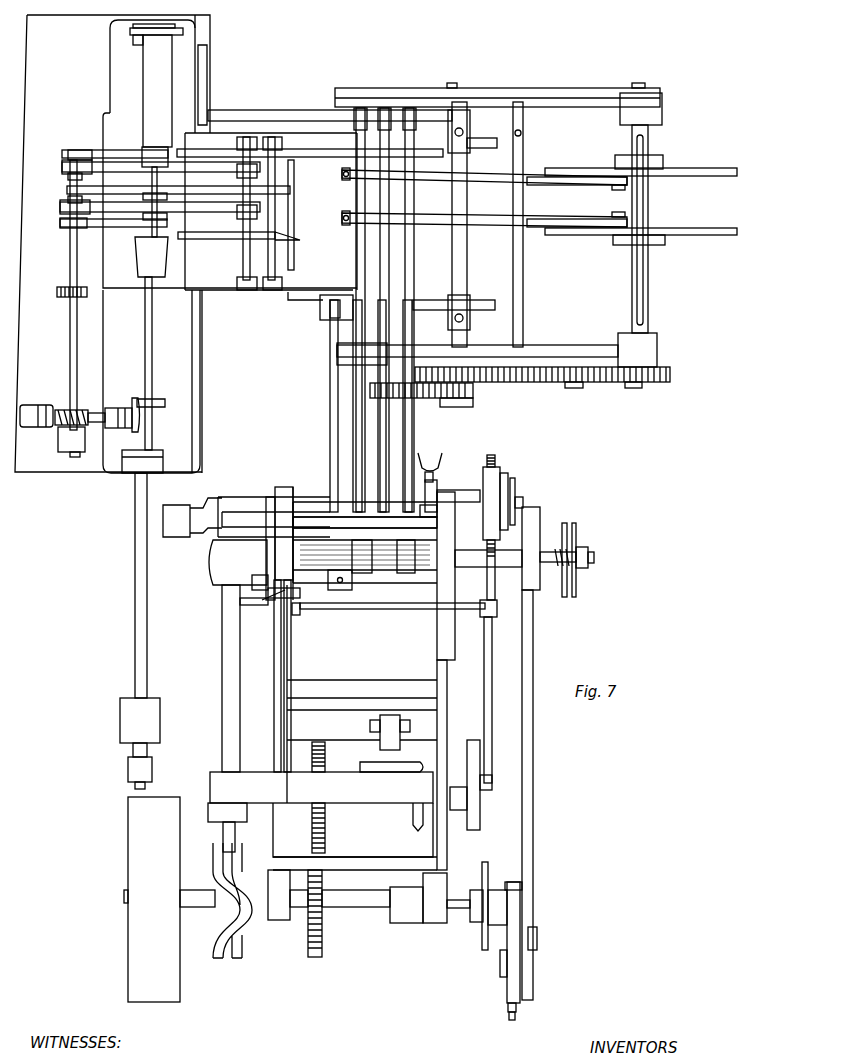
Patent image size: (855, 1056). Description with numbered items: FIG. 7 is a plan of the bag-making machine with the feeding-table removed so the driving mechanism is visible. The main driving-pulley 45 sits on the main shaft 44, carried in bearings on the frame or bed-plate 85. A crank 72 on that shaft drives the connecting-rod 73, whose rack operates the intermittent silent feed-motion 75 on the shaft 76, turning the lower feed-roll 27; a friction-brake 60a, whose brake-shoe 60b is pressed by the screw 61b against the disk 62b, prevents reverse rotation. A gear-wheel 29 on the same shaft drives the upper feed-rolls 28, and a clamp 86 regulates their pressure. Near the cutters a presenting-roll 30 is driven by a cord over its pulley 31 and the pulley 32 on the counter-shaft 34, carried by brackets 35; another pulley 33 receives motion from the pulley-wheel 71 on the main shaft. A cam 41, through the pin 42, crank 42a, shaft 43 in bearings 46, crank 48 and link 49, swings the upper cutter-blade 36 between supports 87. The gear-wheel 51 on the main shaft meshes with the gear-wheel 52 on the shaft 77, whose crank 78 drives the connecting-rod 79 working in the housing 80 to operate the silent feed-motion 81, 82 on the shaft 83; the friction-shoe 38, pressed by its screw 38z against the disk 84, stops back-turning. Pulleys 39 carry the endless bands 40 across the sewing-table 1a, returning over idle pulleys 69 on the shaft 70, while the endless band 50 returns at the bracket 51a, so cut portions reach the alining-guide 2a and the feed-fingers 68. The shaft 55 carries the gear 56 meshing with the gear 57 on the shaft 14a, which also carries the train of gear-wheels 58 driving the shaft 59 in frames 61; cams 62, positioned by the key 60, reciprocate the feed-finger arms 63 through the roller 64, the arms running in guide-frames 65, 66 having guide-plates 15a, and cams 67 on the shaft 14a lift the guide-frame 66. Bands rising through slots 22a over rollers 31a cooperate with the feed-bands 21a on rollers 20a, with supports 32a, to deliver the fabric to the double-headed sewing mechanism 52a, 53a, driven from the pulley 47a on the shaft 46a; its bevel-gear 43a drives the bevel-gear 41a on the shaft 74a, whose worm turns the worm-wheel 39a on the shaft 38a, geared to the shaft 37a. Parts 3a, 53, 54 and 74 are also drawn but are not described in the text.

The sewing-table 1a is at (311, 290).
The alining-guide 2a is at (315, 157).
The bar 3a is at (220, 239).
The shaft 14a is at (456, 406).
The guide-plates 15a is at (520, 168).
The rollers 20a is at (292, 190).
The endless feed-bands 21a is at (192, 176).
The slots 22a is at (294, 220).
The lower feed-roll 27 is at (380, 576).
The upper feed-rolls 28 is at (406, 576).
The gear-wheel 29 is at (418, 569).
The presenting-roll 30 is at (358, 533).
The pulley 31 is at (303, 521).
The rollers 31a is at (62, 166).
The pulley 32 is at (300, 615).
The supports 32a is at (80, 152).
The pulley 33 is at (506, 615).
The counter-shaft 34 is at (375, 609).
The brackets 35 is at (291, 653).
The upper cutter-blade 36 is at (310, 515).
The shaft 37a is at (152, 362).
The friction-shoe 38 is at (440, 486).
The shaft 38a is at (70, 343).
The screw 38z is at (438, 462).
The pulleys 39 is at (330, 500).
The worm-wheel 39a is at (60, 432).
The endless bands 40 is at (356, 253).
The cam 41 is at (230, 964).
The bevel-gear 41a is at (134, 412).
The pin 42 is at (226, 846).
The crank 42a is at (214, 812).
The shaft 43 is at (222, 722).
The bevel-gear 43a is at (160, 408).
The main shaft 44 is at (193, 912).
The main driving-pulley 45 is at (152, 899).
The bearings 46 is at (213, 570).
The shaft 46a is at (135, 588).
The pulley 47a is at (120, 712).
The crank 48 is at (165, 530).
The link 49 is at (58, 290).
The endless band 50 is at (330, 333).
The gear-wheel 51 is at (303, 955).
The bracket 51a is at (320, 315).
The gear-wheel 52 is at (353, 799).
The double-headed sewing mechanism 52a is at (146, 90).
The latch 53 is at (412, 820).
The double-headed sewing mechanism 53a is at (140, 258).
The block 54 is at (378, 763).
The shaft 55 is at (392, 652).
The gear 56 is at (422, 399).
The gear 57 is at (473, 400).
The train of gear-wheels 58 is at (470, 383).
The shaft 59 is at (645, 306).
The key or feather 60 is at (645, 272).
The friction-brake 60a is at (272, 608).
The brake-shoe 60b is at (252, 585).
The frames 61 is at (662, 110).
The screw 61b is at (262, 600).
The cams 62 is at (663, 164).
The disk 62b is at (268, 540).
The feed-finger arms 63 is at (562, 184).
The roller 64 is at (620, 187).
The guide-frame 65 is at (523, 265).
The guide-frame 66 is at (467, 262).
The cams 67 is at (480, 146).
The feed-finger 68 is at (344, 177).
The idle pulleys 69 is at (340, 96).
The shaft 70 is at (268, 100).
The pulley-wheel 71 is at (482, 873).
The crank 72 is at (520, 992).
The connecting-rod 73 is at (533, 937).
The block 74 is at (522, 576).
The shaft 74a is at (98, 410).
The intermittent silent feed-motion 75 is at (578, 583).
The shaft 76 is at (595, 557).
The shaft 77 is at (462, 812).
The crank 78 is at (478, 807).
The connecting-rod 79 is at (486, 677).
The housing 80 is at (488, 532).
The intermittent silent feed-motion 81 is at (482, 510).
The intermittent silent feed-motion 82 is at (514, 488).
The shaft 83 is at (540, 495).
The disk 84 is at (428, 518).
The frame or bed-plate 85 is at (283, 743).
The clamp 86 is at (333, 590).
The supports 87 is at (280, 500).